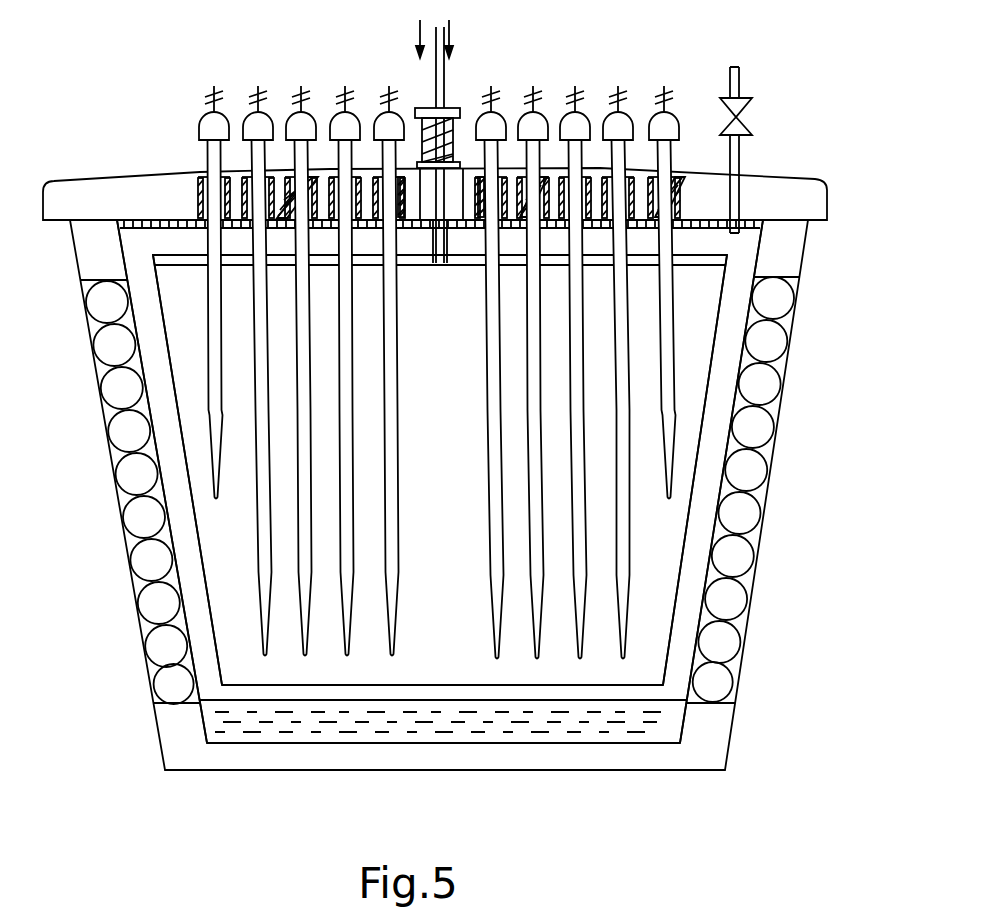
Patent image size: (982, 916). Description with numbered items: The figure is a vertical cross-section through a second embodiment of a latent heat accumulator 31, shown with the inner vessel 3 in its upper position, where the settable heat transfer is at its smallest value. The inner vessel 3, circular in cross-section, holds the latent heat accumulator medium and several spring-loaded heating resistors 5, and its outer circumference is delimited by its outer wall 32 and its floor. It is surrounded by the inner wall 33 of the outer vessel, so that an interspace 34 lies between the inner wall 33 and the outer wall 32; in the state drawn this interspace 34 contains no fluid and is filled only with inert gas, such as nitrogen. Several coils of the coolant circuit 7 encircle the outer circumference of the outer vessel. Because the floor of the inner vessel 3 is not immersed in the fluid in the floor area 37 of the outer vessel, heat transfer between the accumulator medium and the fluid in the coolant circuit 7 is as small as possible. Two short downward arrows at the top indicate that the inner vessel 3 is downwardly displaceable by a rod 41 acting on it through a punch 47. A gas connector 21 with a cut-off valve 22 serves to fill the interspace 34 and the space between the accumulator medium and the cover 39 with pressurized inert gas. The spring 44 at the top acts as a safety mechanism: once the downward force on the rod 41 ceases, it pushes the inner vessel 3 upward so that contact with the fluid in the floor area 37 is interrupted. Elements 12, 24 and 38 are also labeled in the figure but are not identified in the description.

The inner vessel 3 is at (446, 590).
The heating resistors 5 is at (258, 457).
The coolant circuit 7 is at (790, 347).
The inner vessel 12 is at (690, 256).
The gas connector 21 is at (740, 82).
The cut-off valve 22 is at (752, 108).
The insulating bushings 24 is at (197, 200).
The latent heat accumulator 31 is at (746, 720).
The outer wall 32 is at (213, 618).
The inner wall 33 is at (133, 325).
The interspace 34 is at (723, 392).
The floor area 37 is at (618, 732).
The vessel bottom 38 is at (228, 772).
The cover 39 is at (760, 180).
The rod 41 is at (444, 83).
The spring 44 is at (452, 128).
The punch 47 is at (438, 232).